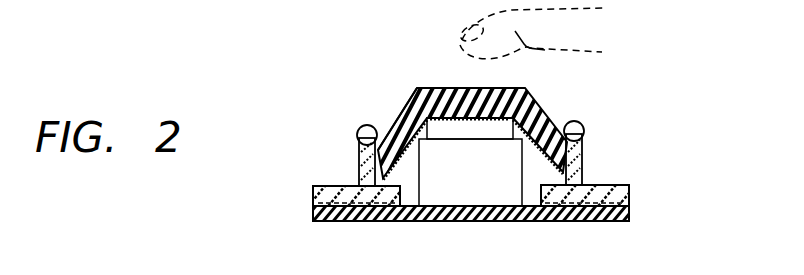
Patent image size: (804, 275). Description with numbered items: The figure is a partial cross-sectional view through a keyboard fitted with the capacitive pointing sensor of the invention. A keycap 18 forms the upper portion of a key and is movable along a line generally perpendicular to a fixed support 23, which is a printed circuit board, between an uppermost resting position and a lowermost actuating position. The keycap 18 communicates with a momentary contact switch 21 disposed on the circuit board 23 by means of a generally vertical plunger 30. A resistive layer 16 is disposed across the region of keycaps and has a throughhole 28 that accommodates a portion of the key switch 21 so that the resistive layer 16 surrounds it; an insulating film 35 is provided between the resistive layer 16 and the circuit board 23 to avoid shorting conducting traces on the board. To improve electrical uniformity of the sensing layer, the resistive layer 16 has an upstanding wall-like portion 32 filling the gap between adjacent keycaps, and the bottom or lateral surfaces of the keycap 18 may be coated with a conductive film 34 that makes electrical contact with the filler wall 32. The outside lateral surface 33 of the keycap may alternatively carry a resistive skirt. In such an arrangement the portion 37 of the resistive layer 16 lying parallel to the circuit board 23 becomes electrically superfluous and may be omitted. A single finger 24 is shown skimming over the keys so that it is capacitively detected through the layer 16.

The resistive layer 16 is at (345, 188).
The keycap 18 is at (533, 88).
The momentary contact switch 21 is at (468, 183).
The fixed support 23 is at (557, 207).
The finger 24 is at (468, 45).
The throughhole 28 is at (416, 172).
The plunger 30 is at (498, 130).
The upstanding wall-like portion 32 is at (357, 142).
The outside lateral surface 33 is at (547, 108).
The conductive film 34 is at (391, 113).
The insulating film 35 is at (335, 221).
The portion of the resistive layer parallel to the printed circuit board 37 is at (608, 186).